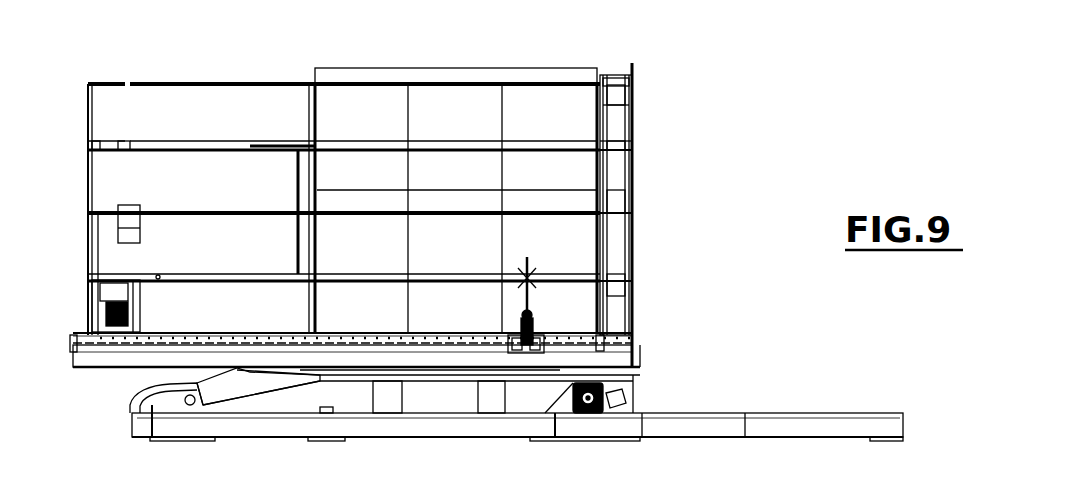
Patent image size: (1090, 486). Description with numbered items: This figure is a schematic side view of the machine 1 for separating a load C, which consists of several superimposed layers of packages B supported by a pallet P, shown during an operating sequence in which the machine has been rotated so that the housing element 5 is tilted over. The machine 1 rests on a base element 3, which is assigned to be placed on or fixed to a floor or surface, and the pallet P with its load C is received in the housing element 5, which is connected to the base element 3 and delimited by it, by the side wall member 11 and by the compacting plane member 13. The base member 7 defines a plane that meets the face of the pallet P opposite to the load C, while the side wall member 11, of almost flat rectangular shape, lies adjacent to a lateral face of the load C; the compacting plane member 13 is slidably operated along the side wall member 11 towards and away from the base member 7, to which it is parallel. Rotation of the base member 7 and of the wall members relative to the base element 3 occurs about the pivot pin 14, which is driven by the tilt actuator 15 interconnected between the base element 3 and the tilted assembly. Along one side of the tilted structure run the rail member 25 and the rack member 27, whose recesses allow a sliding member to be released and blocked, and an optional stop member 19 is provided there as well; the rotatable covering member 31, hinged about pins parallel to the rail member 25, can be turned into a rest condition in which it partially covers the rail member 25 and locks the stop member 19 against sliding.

The machine 1 is at (826, 134).
The base element 3 is at (777, 425).
The housing element 5 is at (208, 76).
The base member 7 is at (633, 90).
The side wall member 11 is at (222, 195).
The compacting plane member 13 is at (313, 163).
The pivot pin 14 is at (627, 397).
The tilt actuator 15 is at (135, 410).
The stop member 19 is at (531, 304).
The rail member 25 is at (430, 337).
The rack member 27 is at (350, 330).
The rotatable covering member 31 is at (633, 370).
The layers of packages B is at (357, 80).
The load C is at (305, 224).
The pallet P is at (612, 82).